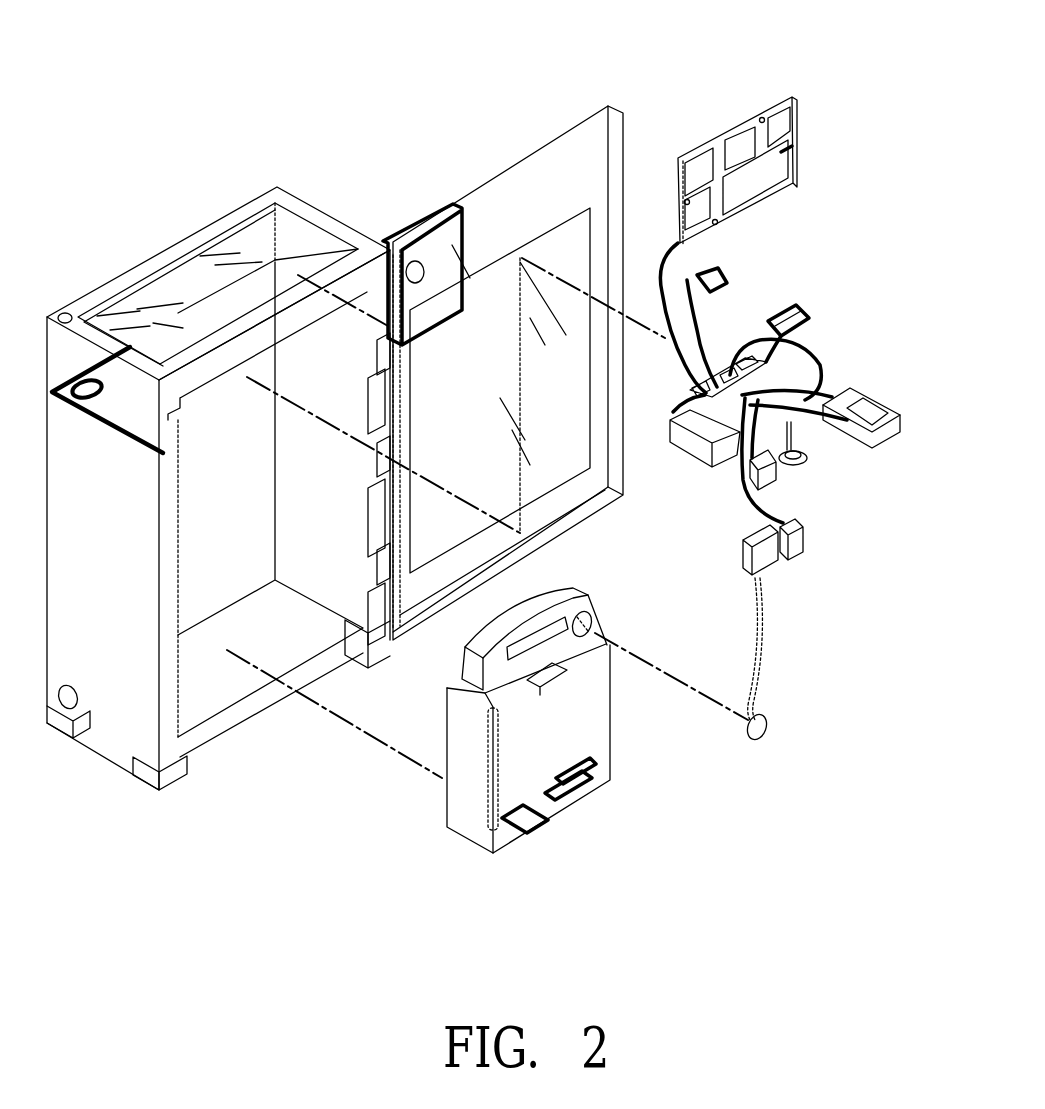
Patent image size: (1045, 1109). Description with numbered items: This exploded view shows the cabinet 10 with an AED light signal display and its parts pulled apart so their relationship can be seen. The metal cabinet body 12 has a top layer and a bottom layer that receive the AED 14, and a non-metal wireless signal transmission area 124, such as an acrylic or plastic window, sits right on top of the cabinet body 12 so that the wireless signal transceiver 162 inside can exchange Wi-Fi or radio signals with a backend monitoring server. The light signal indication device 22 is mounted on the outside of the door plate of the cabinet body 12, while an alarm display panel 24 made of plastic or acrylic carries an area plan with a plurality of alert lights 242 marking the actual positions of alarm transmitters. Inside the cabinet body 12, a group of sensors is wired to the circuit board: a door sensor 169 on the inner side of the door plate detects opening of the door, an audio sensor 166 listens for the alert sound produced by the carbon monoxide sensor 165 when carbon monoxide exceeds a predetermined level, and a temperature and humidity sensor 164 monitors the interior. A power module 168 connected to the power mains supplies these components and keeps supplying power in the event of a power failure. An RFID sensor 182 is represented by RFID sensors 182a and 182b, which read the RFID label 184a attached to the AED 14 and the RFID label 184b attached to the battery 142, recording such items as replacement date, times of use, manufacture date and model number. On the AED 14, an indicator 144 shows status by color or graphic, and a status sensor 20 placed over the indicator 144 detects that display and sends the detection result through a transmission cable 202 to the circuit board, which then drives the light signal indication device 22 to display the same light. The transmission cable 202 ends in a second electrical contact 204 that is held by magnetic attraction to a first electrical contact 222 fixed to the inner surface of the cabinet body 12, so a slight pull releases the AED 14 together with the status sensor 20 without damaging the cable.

The cabinet with an AED light signal display 10 is at (288, 66).
The cabinet body 12 is at (90, 298).
The wireless signal transmission area 124 is at (288, 213).
The light signal indication device 22 is at (419, 206).
The alarm display panel 24 is at (788, 98).
The alert lights 242 is at (721, 147).
The door sensor 169 is at (722, 276).
The audio sensor 166 is at (788, 314).
The temperature and humidity sensor 164 is at (799, 358).
The power module 168 is at (700, 450).
The wireless signal transceiver 162 is at (801, 458).
The carbon monoxide sensor 165 is at (778, 470).
The RFID sensor 182 is at (874, 371).
The RFID sensor 182a is at (866, 398).
The RFID sensor 182b is at (904, 389).
The first electrical contact 222 is at (802, 547).
The second electrical contact 204 is at (762, 566).
The transmission cable 202 is at (764, 630).
The status sensor 20 is at (764, 730).
The AED 14 is at (569, 723).
The indicator 144 is at (592, 621).
The battery 142 is at (594, 757).
The RFID label 184a is at (548, 811).
The RFID label 184b is at (594, 780).